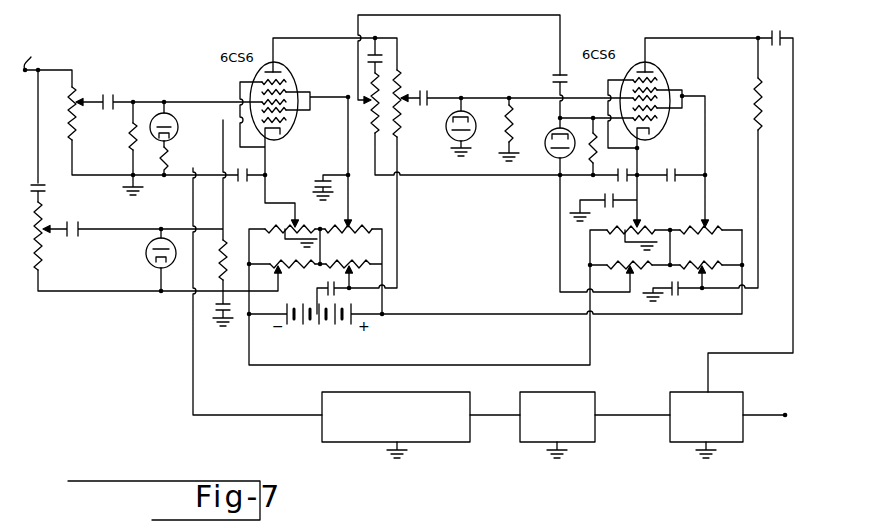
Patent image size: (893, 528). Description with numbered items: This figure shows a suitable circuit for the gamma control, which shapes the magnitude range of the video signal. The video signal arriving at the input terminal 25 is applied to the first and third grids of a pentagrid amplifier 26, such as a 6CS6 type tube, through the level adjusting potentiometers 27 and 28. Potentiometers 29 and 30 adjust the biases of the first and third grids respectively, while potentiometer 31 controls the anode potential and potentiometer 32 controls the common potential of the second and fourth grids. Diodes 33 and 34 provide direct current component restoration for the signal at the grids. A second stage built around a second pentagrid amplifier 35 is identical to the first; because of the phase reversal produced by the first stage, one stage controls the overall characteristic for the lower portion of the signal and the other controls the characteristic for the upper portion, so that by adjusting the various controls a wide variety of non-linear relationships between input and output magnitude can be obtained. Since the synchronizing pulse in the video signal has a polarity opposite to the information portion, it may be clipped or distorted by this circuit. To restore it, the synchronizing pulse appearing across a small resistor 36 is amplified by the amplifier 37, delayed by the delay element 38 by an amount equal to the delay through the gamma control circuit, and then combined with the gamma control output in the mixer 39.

The input terminal 25 is at (47, 64).
The pentagrid amplifier 26 is at (291, 70).
The level adjusting potentiometer 27 is at (76, 122).
The level adjusting potentiometer 28 is at (48, 250).
The potentiometer 29 is at (283, 269).
The potentiometer 30 is at (288, 220).
The potentiometer 31 is at (349, 265).
The potentiometer 32 is at (351, 224).
The diode 33 is at (178, 128).
The diode 34 is at (146, 257).
The second pentagrid amplifier 35 is at (667, 68).
The small resistor 36 is at (161, 161).
The amplifier 37 is at (322, 402).
The delay element 38 is at (520, 400).
The mixer 39 is at (670, 400).